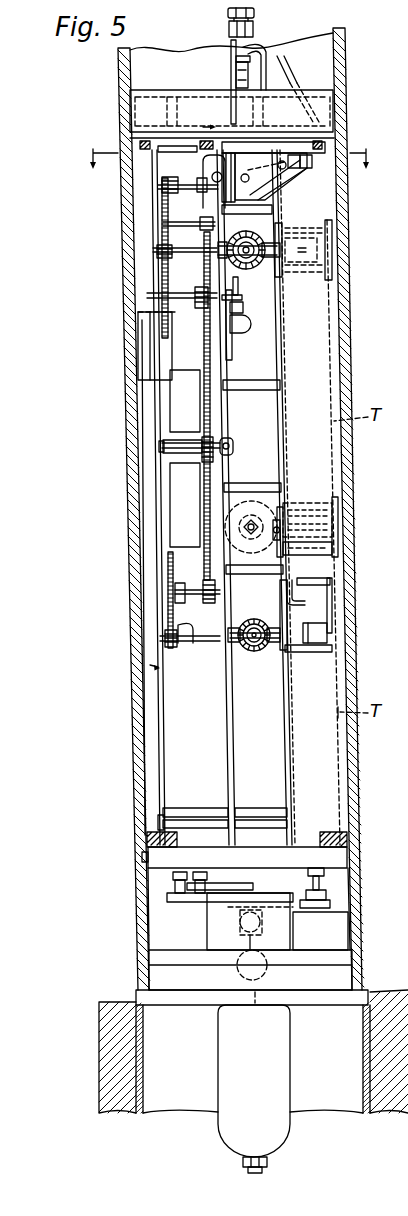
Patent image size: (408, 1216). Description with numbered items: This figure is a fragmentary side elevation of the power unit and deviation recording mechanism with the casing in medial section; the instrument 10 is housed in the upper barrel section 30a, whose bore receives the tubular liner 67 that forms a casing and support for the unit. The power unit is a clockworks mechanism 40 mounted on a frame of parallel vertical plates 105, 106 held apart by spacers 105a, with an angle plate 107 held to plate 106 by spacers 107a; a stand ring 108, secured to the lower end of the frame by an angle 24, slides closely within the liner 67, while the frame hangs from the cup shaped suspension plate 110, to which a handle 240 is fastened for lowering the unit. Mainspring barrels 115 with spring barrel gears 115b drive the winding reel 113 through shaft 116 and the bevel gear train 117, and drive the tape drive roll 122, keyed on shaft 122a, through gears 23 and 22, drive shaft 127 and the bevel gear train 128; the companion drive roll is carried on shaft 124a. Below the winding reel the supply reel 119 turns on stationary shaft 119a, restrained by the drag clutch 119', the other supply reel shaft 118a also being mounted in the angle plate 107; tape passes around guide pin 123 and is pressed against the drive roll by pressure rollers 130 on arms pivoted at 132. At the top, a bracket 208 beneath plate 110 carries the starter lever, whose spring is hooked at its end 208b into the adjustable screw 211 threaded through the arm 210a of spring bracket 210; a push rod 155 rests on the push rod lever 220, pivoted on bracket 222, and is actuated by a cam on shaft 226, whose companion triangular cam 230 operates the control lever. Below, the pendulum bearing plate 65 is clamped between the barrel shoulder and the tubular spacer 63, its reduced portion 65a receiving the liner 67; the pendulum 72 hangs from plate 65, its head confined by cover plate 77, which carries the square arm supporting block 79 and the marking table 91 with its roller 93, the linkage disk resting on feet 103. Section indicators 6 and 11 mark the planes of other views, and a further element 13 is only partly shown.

The section line 6- 6 is at (229, 149).
The well drilling apparatus 10 is at (402, 114).
The section line 11- 11 is at (179, 476).
The element 13 is at (294, 604).
The gear 22 is at (167, 566).
The gear 23 is at (211, 604).
The angle 24 is at (203, 443).
The upper barrel section 30a is at (100, 1003).
The clockworks mechanism 40 is at (318, 385).
The tubular supporting liner 63 is at (144, 1052).
The pendulum bearing plate 65 is at (188, 1000).
The reduced portion of pendulum bearing plate 65a is at (250, 970).
The tubular liner 67 is at (134, 786).
The pendulum 72 is at (291, 1060).
The cover plate 77 is at (210, 908).
The arm supporting structure 79 is at (207, 913).
The marking table 91 is at (320, 931).
The roller 93 is at (327, 920).
The feet 103 is at (143, 152).
The vertical plate 105 is at (163, 727).
The spacers 105a is at (170, 153).
The vertical plate 106 is at (230, 742).
The angle plate 107 is at (288, 693).
The spacers 107a is at (236, 214).
The stand ring 108 is at (348, 834).
The cup shaped plate 110 is at (340, 127).
The winding reel 113 is at (328, 258).
The mainspring barrels 115 is at (188, 458).
The spring barrel gears 115b is at (211, 478).
The shaft 116 is at (178, 250).
The bevel gear train 117 is at (258, 238).
The stationary shaft 118a is at (243, 528).
The recording tape supply reel 119 is at (339, 530).
The stationary shaft 119a is at (282, 503).
The clutch 119' is at (356, 510).
The driving roll 122 is at (332, 646).
The shaft 122a is at (278, 642).
The guide pin 123 is at (313, 556).
The shaft 124a is at (255, 618).
The drive shaft 127 is at (165, 632).
The bevel gear train 128 is at (243, 650).
The pressure rollers 130 is at (318, 630).
The pivot 132 is at (317, 587).
The push rod 155 is at (230, 103).
The bracket 208 is at (298, 181).
The upper end of coil spring 208b is at (237, 78).
The spring bracket 210 is at (279, 82).
The upper arm portion 210a is at (246, 48).
The adjustable screw 211 is at (230, 38).
The push rod lever 220 is at (246, 323).
The bracket 222 is at (233, 343).
The shaft 226 is at (250, 318).
The triangular cam 230 is at (205, 318).
The handle 240 is at (170, 90).